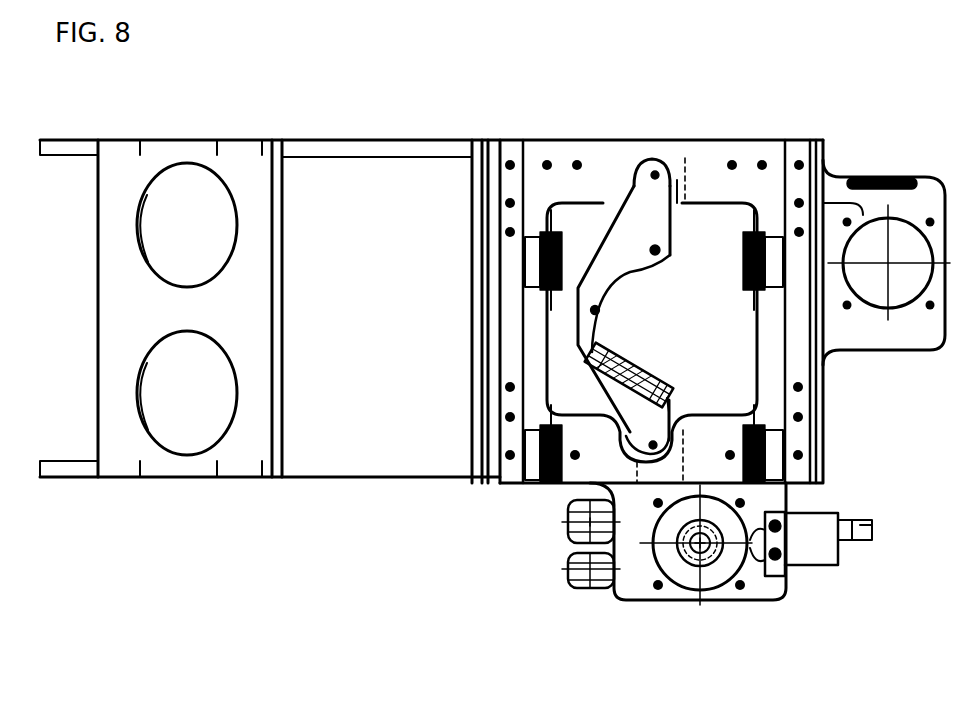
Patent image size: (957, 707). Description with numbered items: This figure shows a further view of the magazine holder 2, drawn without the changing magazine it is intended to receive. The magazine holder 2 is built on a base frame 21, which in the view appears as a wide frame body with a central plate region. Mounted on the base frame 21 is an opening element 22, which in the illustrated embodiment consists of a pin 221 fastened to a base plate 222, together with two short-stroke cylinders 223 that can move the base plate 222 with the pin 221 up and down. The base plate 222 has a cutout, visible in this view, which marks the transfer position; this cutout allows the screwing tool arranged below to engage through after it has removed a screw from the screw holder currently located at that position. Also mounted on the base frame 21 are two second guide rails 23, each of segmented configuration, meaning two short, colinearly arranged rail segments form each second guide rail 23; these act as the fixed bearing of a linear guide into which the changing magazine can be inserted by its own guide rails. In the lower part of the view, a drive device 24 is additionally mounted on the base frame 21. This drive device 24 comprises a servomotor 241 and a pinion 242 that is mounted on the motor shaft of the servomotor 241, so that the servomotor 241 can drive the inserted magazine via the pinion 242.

The magazine holder 2 is at (371, 116).
The base frame 21 is at (427, 148).
The opening element 22 is at (695, 314).
The pin 221 is at (661, 250).
The base plate 222 is at (628, 285).
The short-stroke cylinders 223 is at (672, 177).
The second guide rails 23 is at (780, 273).
The drive device 24 is at (740, 611).
The servomotor 241 is at (672, 568).
The pinion 242 is at (665, 520).